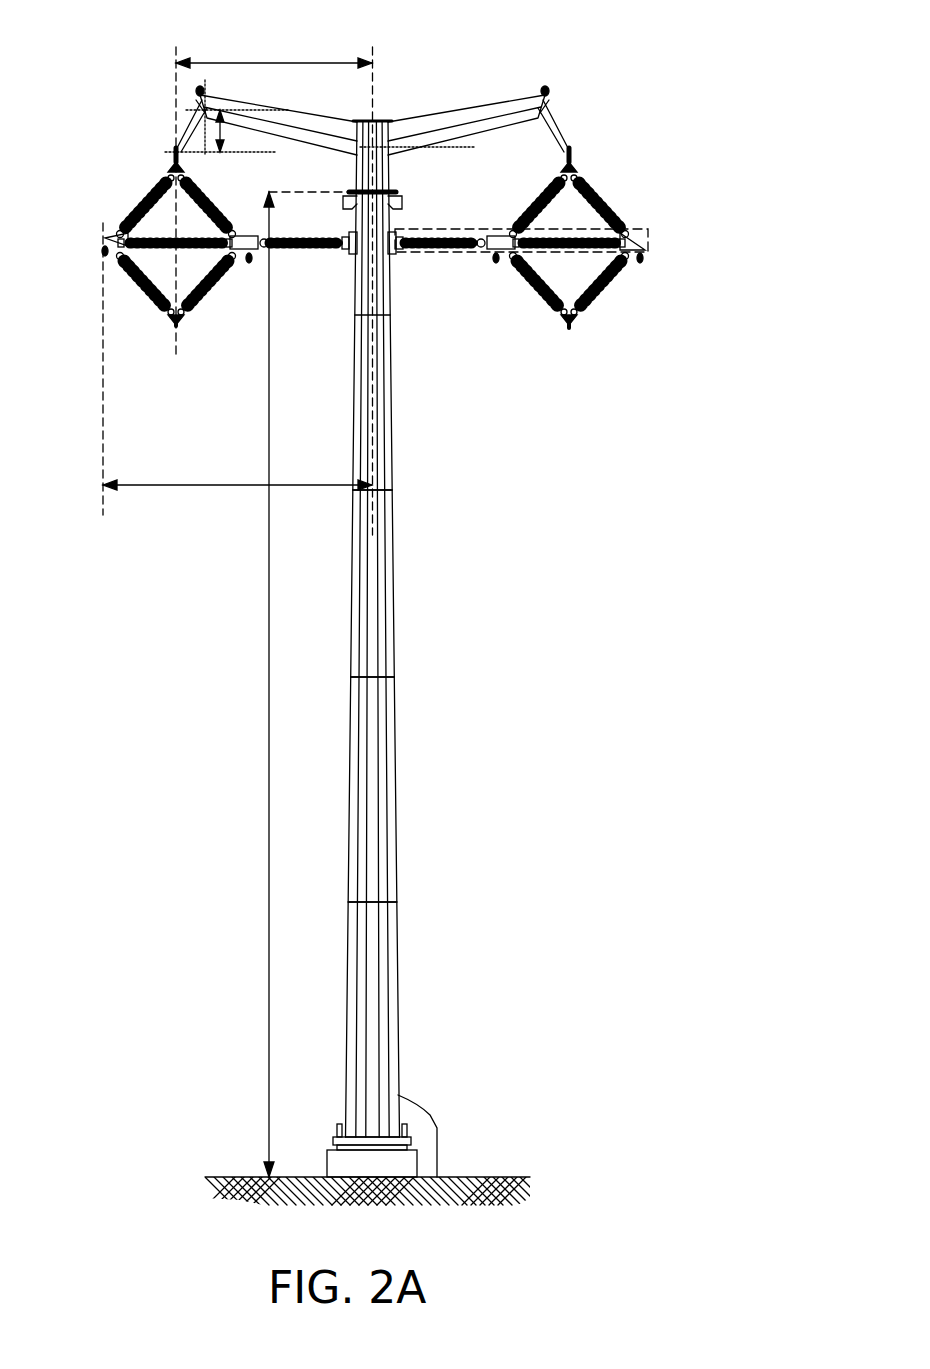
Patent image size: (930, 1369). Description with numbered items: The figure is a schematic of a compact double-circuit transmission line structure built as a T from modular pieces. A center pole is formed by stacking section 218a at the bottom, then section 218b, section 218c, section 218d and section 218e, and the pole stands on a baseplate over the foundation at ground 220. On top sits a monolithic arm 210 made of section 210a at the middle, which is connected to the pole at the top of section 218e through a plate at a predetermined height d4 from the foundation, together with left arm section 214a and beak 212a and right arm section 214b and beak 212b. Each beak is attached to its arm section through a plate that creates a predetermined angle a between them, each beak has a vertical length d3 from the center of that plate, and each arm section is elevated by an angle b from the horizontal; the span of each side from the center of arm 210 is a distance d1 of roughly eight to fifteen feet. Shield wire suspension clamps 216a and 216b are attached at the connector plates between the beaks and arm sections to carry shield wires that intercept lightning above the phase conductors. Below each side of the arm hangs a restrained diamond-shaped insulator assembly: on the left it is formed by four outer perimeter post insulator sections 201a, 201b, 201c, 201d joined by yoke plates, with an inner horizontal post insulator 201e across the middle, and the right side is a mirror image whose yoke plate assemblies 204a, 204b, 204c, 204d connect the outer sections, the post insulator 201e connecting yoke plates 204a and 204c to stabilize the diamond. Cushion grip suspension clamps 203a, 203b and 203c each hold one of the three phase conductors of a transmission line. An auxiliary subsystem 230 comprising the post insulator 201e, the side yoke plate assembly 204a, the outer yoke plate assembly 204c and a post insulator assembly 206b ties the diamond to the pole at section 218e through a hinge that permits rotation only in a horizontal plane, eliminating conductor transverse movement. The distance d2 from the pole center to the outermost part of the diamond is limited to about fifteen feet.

The arm 210 is at (379, 112).
The arm center section 210a is at (385, 160).
The center pole section 218a is at (397, 1002).
The center pole section 218b is at (396, 812).
The center pole section 218c is at (393, 575).
The center pole section 218d is at (393, 400).
The center pole section 218e is at (345, 270).
The ground 220 is at (497, 1176).
The arm section 214a is at (290, 113).
The arm section 214b is at (455, 104).
The shield wire suspension clamp 216a is at (201, 88).
The shield wire suspension clamp 216b is at (546, 88).
The beak section 212a is at (186, 126).
The beak section 212b is at (555, 118).
The outer perimeter post insulator section 201a is at (152, 195).
The outer perimeter post insulator section 201b is at (212, 196).
The outer perimeter post insulator section 201c is at (120, 272).
The outer perimeter post insulator section 201d is at (200, 300).
The inner horizontal post insulator 201e is at (148, 238).
The side yoke plate assembly 204a is at (498, 236).
The yoke plate assembly 204b is at (562, 314).
The outer yoke plate assembly 204c is at (628, 256).
The yoke plate assembly 204d is at (572, 172).
The cushion grip suspension clamp 203a is at (495, 262).
The cushion grip suspension clamp 203b is at (574, 328).
The cushion grip suspension clamp 203c is at (641, 256).
The post insulator assembly 206b is at (458, 250).
The auxiliary subsystem 230 is at (637, 230).
The arm span distance d1 is at (274, 198).
The pole-to-insulator span distance d2 is at (237, 369).
The beak vertical length d3 is at (227, 118).
The arm connection height d4 is at (310, 684).
The beak-to-arm angle a is at (168, 147).
The arm elevation angle b is at (470, 142).